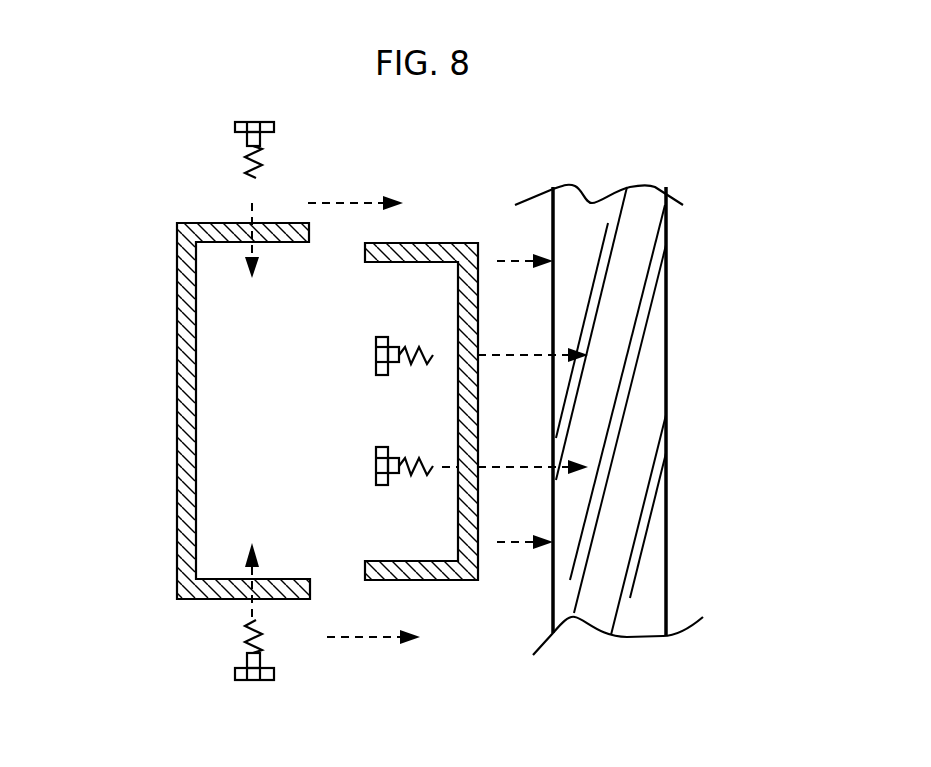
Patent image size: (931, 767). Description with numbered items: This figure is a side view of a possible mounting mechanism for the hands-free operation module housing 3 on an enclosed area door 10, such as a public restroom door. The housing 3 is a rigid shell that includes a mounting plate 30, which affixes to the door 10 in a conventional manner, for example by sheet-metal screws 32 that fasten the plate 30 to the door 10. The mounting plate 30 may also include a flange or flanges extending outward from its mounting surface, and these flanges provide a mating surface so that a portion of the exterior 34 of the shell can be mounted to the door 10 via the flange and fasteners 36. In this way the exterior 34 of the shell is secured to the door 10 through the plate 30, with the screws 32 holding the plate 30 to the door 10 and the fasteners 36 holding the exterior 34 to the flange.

The housing 3 is at (628, 368).
The door 10 is at (648, 315).
The mounting plate 30 is at (420, 580).
The sheet-metal screws 32 is at (376, 347).
The exterior of the shell 34 is at (187, 360).
The fasteners 36 is at (237, 122).